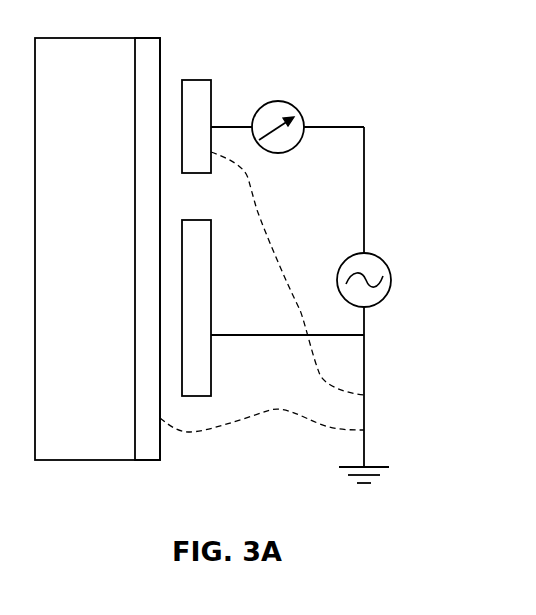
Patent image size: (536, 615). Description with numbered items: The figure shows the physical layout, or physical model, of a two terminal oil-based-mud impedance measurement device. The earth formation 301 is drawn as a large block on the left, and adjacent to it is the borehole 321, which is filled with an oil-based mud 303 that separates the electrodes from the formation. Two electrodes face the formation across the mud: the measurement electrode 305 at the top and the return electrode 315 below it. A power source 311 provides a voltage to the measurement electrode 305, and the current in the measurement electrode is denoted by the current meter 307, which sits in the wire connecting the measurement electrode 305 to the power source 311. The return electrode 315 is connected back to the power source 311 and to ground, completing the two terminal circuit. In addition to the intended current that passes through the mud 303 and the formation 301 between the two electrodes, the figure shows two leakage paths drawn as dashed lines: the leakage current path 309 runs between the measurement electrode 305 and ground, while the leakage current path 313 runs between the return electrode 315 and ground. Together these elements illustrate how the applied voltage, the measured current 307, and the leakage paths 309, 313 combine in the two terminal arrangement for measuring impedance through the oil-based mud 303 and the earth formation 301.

The earth formation 301 is at (108, 262).
The oil-based mud 303 is at (147, 45).
The measurement electrode 305 is at (196, 80).
The current in the measurement electrode 307 is at (284, 104).
The leakage current path between the measurement electrode and ground 309 is at (254, 203).
The power source 311 is at (389, 268).
The leakage current path between the return electrode and ground 313 is at (214, 428).
The return electrode 315 is at (213, 373).
The borehole 321 is at (220, 211).